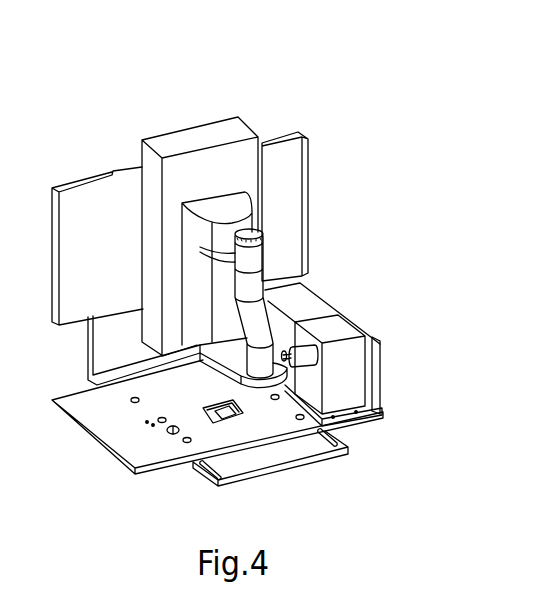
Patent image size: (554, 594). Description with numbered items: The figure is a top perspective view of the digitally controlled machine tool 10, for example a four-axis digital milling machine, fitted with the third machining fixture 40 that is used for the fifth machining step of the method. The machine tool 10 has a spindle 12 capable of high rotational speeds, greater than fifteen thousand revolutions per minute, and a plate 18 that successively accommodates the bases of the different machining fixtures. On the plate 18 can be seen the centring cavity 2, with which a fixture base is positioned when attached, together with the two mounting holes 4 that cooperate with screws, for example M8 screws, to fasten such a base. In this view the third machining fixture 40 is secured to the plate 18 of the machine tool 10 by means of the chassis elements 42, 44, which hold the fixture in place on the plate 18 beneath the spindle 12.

The machine tool 10 is at (302, 85).
The spindle 12 is at (190, 268).
The plate 18 is at (96, 443).
The centring cavity 2 is at (238, 424).
The mounting holes 4 is at (207, 389).
The third machining fixture 40 is at (308, 364).
The chassis element 42 is at (338, 392).
The chassis element 44 is at (375, 405).